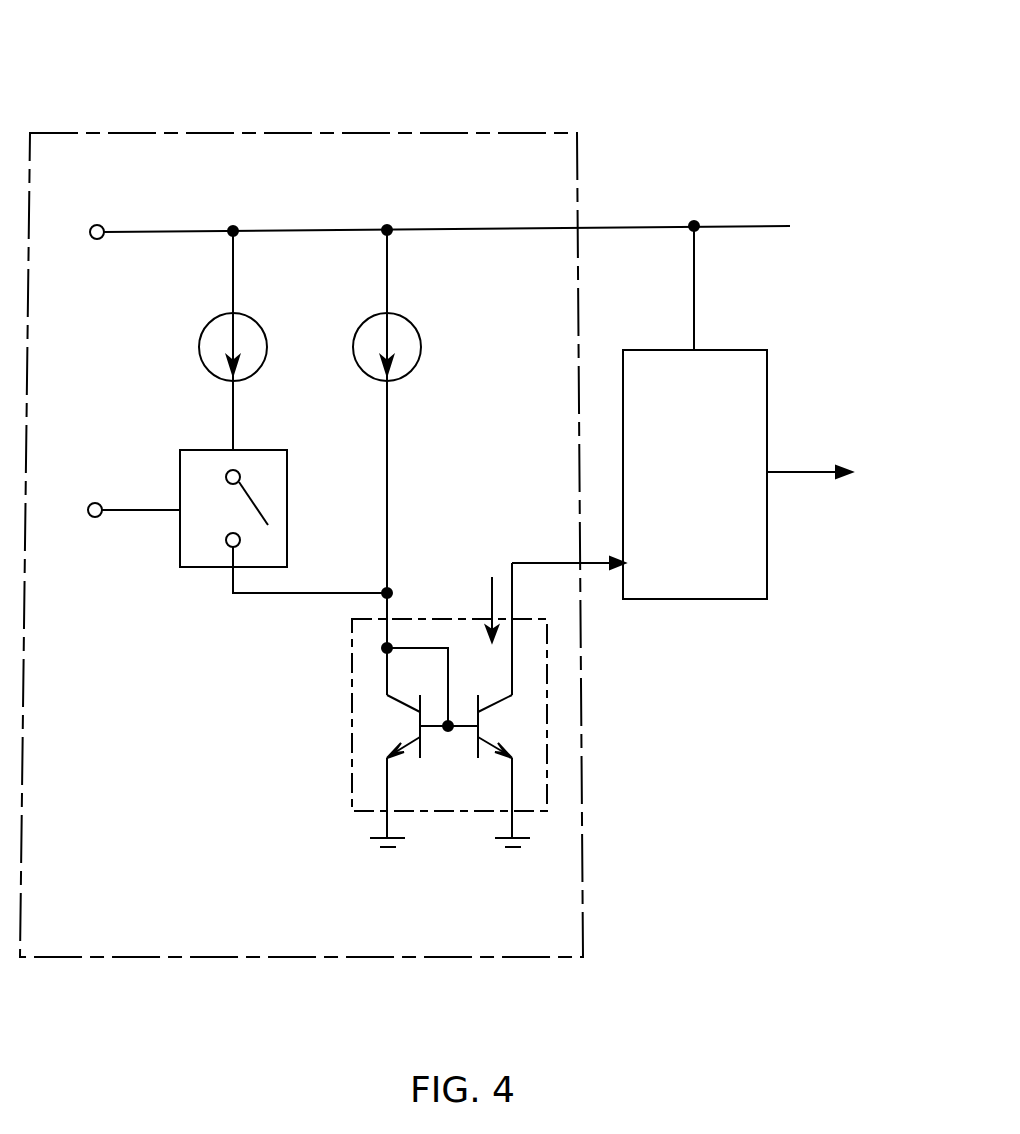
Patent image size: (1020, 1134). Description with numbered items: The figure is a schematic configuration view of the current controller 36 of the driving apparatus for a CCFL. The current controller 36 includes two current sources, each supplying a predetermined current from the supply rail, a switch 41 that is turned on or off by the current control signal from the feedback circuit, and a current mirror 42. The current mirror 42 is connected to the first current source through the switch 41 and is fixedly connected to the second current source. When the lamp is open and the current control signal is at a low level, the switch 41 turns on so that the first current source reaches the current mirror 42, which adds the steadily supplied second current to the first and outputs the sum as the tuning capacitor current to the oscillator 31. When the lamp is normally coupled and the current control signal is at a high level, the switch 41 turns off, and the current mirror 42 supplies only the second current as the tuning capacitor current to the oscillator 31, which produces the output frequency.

The current controller 36 is at (145, 132).
The oscillator 31 is at (756, 388).
The switch 41 is at (180, 562).
The current mirror 42 is at (352, 742).